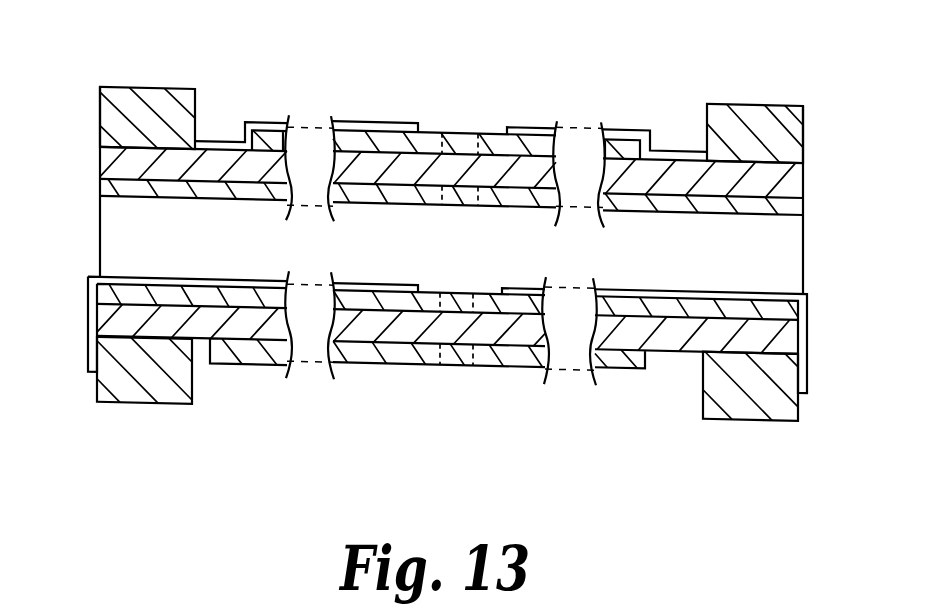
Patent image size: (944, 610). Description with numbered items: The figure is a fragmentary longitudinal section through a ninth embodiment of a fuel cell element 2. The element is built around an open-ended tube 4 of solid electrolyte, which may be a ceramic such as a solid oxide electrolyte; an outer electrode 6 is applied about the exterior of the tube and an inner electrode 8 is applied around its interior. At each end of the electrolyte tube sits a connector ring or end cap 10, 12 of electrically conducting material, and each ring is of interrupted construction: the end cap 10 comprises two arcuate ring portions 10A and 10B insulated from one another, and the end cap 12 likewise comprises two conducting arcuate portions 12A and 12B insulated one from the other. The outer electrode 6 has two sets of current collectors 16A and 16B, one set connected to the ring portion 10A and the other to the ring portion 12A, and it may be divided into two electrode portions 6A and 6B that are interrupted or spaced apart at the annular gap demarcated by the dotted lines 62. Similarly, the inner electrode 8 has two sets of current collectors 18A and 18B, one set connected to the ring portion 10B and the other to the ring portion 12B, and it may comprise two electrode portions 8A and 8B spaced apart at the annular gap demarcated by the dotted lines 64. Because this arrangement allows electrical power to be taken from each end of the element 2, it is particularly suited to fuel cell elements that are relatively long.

The fuel cell element 2 is at (520, 78).
The open-ended tube of solid electrolyte 4 is at (678, 323).
The outer electrode 6 is at (432, 121).
The outer electrode portion 6A is at (383, 135).
The outer electrode portion 6B is at (612, 141).
The inner electrode 8 is at (427, 280).
The inner electrode portion 8A is at (141, 192).
The inner electrode portion 8B is at (770, 189).
The connector ring or end cap 10 is at (103, 411).
The arcuate ring portion 10A is at (165, 97).
The arcuate ring portion 10B is at (173, 389).
The connector ring or end cap 12 is at (807, 123).
The arcuate ring portion 12A is at (748, 108).
The arcuate ring portion 12B is at (742, 391).
The current collectors 16A is at (267, 125).
The current collectors 16B is at (523, 121).
The current collectors 18A is at (227, 278).
The current collectors 18B is at (517, 280).
The dotted lines 62 is at (468, 348).
The dotted lines 64 is at (473, 290).